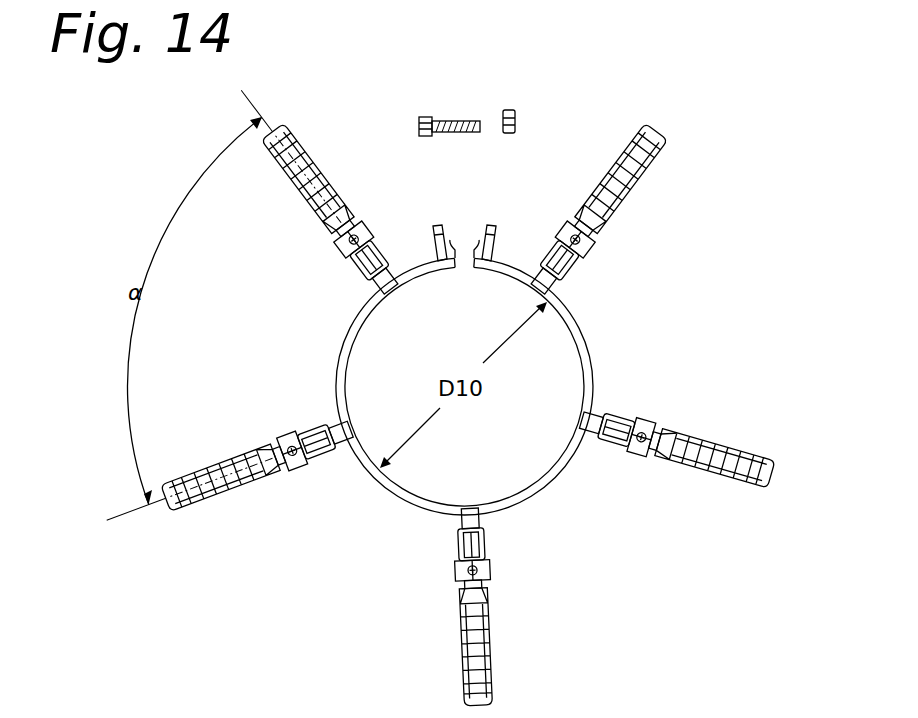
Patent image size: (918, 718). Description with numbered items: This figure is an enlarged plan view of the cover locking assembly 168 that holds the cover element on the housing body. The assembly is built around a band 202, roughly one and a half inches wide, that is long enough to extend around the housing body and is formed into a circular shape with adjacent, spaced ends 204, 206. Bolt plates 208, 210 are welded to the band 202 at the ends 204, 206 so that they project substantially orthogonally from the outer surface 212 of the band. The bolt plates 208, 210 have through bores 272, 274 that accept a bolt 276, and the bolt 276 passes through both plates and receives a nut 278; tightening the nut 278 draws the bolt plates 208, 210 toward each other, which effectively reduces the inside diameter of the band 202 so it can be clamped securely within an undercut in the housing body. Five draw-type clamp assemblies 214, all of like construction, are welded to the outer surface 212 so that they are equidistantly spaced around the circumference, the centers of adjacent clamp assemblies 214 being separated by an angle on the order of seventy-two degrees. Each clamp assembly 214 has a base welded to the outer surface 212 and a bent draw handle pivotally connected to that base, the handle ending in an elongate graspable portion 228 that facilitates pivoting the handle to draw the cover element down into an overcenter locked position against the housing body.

The cover locking assembly 168 is at (746, 263).
The band 202 is at (400, 508).
The band end 204 is at (452, 262).
The band end 206 is at (470, 264).
The bolt plate 208 is at (438, 224).
The bolt plate 210 is at (492, 224).
The outer surface of the band 212 is at (595, 370).
The draw-type clamp assembly 214 is at (331, 247).
The graspable portion 228 is at (627, 145).
The through bore 272 is at (433, 243).
The through bore 274 is at (497, 243).
The bolt 276 is at (424, 117).
The nut 278 is at (505, 112).